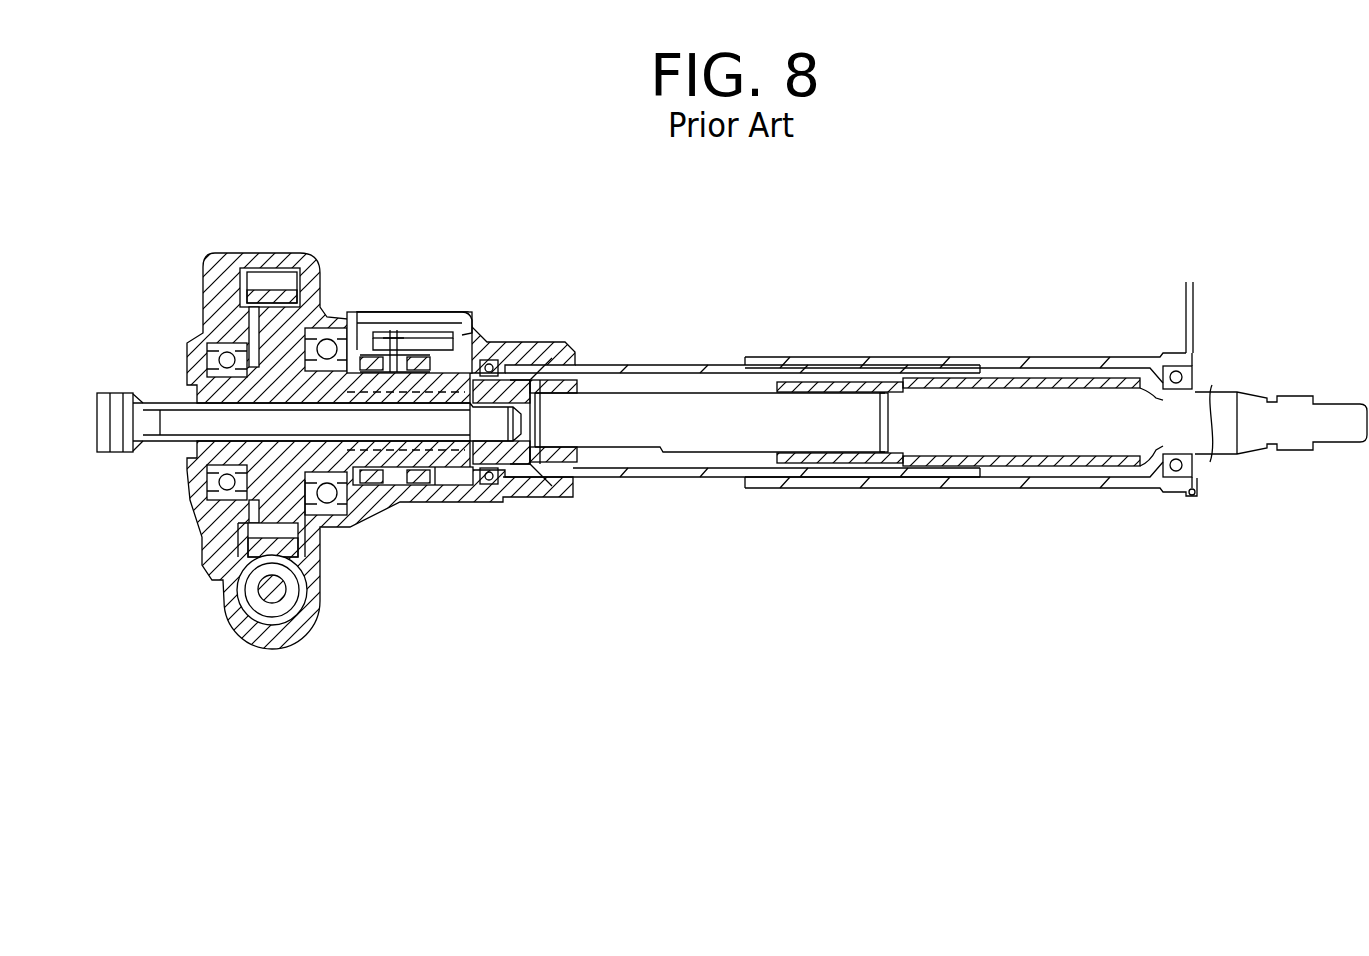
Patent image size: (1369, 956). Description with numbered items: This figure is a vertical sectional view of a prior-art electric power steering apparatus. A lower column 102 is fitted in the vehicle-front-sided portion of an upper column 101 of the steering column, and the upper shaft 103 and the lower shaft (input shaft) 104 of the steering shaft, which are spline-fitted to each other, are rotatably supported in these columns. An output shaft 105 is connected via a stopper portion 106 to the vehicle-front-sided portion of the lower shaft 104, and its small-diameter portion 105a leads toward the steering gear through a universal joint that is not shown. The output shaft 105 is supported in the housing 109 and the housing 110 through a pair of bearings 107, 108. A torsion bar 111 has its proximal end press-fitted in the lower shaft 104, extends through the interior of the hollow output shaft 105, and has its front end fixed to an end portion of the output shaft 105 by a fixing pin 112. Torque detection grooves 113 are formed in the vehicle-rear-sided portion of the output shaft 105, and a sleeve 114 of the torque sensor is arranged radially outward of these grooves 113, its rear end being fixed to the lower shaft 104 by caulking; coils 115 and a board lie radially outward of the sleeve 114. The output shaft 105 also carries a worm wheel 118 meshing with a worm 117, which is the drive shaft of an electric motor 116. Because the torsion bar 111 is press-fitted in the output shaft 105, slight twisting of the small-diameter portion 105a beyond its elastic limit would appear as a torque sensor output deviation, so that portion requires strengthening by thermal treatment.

The upper column 101 is at (1035, 357).
The lower column 102 is at (712, 365).
The upper shaft 103 is at (1040, 480).
The lower shaft (input shaft) 104 is at (845, 432).
The output shaft 105 is at (415, 466).
The small-diameter portion 105a is at (140, 450).
The stopper portion 106 is at (462, 380).
The bearing 107 is at (332, 328).
The bearing 108 is at (197, 333).
The housing 109 is at (270, 253).
The housing 110 is at (200, 300).
The torsion bar 111 is at (165, 440).
The fixing pin 112 is at (117, 396).
The torque detection grooves 113 is at (440, 487).
The sleeve 114 is at (415, 368).
The coils 115 is at (380, 332).
The electric motor 116 is at (290, 630).
The worm 117 is at (268, 612).
The worm wheel 118 is at (285, 523).